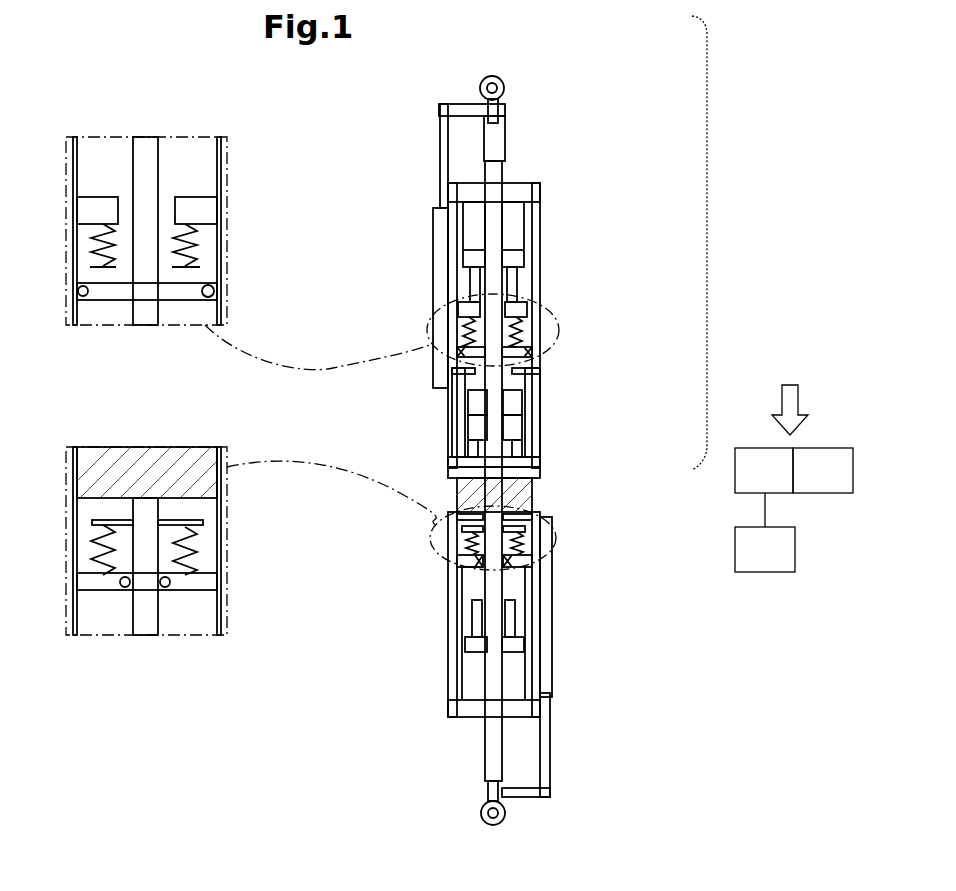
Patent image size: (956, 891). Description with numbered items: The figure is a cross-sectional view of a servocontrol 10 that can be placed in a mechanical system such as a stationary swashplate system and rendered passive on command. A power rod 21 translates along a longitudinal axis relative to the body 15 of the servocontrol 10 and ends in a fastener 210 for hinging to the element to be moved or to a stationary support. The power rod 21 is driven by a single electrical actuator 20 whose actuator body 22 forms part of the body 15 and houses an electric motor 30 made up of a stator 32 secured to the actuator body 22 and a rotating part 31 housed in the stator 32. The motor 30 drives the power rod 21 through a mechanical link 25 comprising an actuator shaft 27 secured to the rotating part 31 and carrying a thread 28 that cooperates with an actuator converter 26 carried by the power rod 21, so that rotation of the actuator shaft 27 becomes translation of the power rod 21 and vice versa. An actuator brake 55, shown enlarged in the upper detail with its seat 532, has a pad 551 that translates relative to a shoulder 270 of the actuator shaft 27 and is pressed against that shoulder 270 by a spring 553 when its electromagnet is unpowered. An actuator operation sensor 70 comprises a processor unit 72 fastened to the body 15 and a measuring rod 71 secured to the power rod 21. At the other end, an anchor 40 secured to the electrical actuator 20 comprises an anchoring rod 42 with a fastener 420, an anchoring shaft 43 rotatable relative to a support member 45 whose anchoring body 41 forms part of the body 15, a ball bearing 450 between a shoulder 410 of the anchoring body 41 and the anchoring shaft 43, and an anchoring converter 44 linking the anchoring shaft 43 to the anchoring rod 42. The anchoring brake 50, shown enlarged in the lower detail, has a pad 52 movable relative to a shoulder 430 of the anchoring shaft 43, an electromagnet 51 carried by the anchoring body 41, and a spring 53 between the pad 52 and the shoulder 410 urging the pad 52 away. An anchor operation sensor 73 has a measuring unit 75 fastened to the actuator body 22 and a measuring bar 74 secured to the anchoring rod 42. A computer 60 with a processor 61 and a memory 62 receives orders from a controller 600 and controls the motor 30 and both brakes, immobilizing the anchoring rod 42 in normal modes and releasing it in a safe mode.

The servocontrol 10 is at (366, 778).
The body 15 is at (478, 463).
The electrical actuator 20 is at (725, 243).
The power rod 21 is at (506, 122).
The actuator body 22 is at (538, 190).
The mechanical link 25 is at (530, 440).
The actuator converter 26 is at (526, 277).
The actuator shaft 27 is at (505, 325).
The thread 28 is at (507, 227).
The electric motor 30 is at (500, 392).
The rotating part 31 is at (473, 402).
The stator 32 is at (512, 402).
The anchor 40 is at (528, 685).
The anchoring body 41 is at (450, 610).
The anchoring rod 42 is at (487, 778).
The anchoring shaft 43 is at (540, 600).
The anchoring converter 44 is at (470, 688).
The support member 45 is at (450, 648).
The anchoring brake 50 is at (583, 540).
The electromagnet 51 is at (525, 487).
The pad 52 is at (472, 533).
The spring 53 is at (522, 548).
The actuator brake 55 is at (453, 328).
The computer 60 is at (794, 459).
The processor 61 is at (764, 470).
The memory 62 is at (823, 470).
The actuator operation sensor 70 is at (408, 264).
The measuring rod 71 is at (440, 120).
The processor unit 72 is at (435, 214).
The anchor operation sensor 73 is at (673, 651).
The measuring bar 74 is at (550, 773).
The measuring unit 75 is at (552, 663).
The fastener 210 is at (504, 86).
The shoulder 270 is at (188, 267).
The shoulder 410 is at (470, 560).
The fastener 420 is at (505, 815).
The shoulder 430 is at (522, 521).
The ball bearing 450 is at (483, 565).
The spring seat block 532 is at (200, 210).
The pad 551 is at (196, 278).
The spring 553 is at (190, 232).
The controller 600 is at (765, 549).